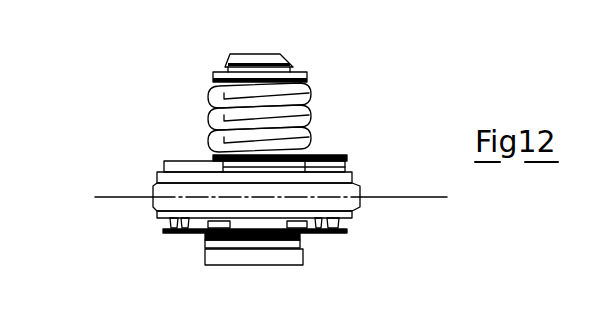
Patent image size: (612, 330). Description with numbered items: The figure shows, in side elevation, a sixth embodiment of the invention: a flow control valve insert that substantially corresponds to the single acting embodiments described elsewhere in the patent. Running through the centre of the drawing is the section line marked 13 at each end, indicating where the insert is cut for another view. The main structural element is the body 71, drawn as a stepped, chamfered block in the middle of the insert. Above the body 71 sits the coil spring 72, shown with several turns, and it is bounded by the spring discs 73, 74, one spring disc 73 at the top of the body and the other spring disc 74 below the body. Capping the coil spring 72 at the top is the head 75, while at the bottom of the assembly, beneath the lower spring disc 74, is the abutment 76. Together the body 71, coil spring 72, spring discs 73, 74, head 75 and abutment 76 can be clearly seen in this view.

The section line 13- 13 is at (269, 192).
The body 71 is at (364, 190).
The coil spring 72 is at (221, 98).
The spring disc 73 is at (188, 161).
The spring disc 74 is at (182, 233).
The head 75 is at (321, 49).
The abutment 76 is at (282, 260).